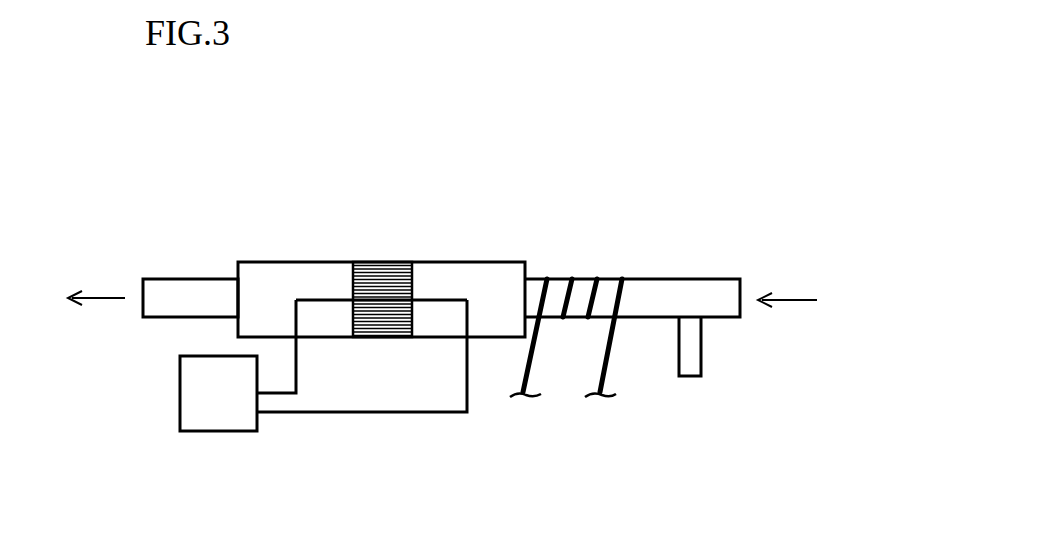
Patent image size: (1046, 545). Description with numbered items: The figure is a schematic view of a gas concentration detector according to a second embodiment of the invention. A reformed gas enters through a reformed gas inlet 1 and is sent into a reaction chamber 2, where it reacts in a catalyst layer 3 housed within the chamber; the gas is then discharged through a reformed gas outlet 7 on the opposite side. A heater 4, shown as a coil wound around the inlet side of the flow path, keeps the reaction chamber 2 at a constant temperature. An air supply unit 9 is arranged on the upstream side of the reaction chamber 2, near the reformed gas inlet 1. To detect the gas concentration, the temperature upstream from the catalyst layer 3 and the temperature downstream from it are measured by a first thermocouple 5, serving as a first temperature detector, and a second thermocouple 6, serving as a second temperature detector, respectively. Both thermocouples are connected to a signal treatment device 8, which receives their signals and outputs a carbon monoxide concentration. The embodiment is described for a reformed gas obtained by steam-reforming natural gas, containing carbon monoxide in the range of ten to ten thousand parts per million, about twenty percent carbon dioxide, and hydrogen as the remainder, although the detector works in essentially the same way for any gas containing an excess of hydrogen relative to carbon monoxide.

The reformed gas inlet 1 is at (645, 279).
The reaction chamber 2 is at (470, 262).
The catalyst layer 3 is at (370, 276).
The heater 4 is at (562, 279).
The first thermocouple 5 is at (467, 362).
The second thermocouple 6 is at (296, 362).
The reformed gas outlet 7 is at (174, 279).
The signal treatment device 8 is at (180, 416).
The air supply unit 9 is at (702, 345).